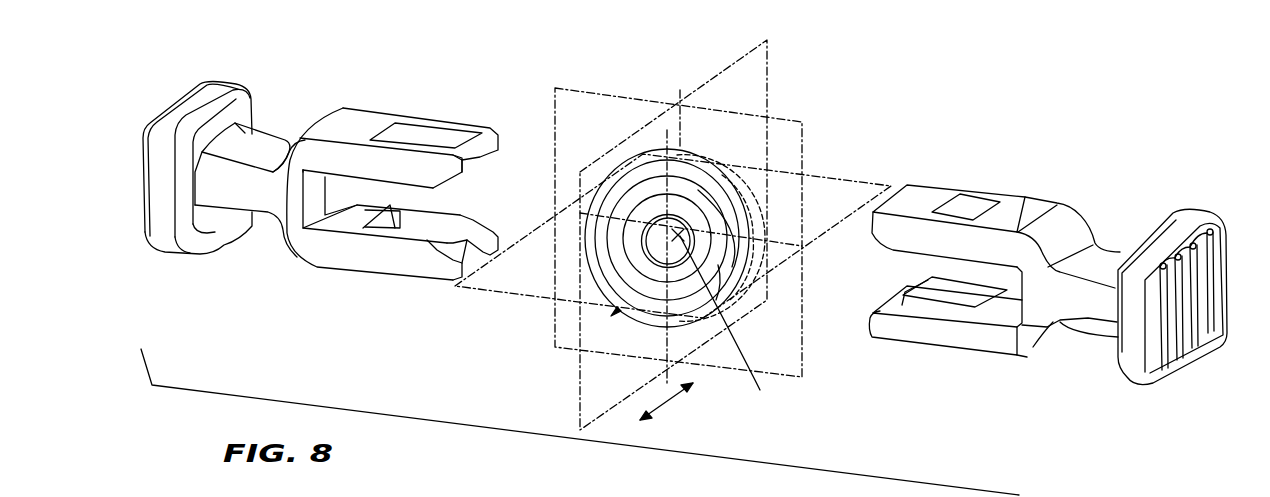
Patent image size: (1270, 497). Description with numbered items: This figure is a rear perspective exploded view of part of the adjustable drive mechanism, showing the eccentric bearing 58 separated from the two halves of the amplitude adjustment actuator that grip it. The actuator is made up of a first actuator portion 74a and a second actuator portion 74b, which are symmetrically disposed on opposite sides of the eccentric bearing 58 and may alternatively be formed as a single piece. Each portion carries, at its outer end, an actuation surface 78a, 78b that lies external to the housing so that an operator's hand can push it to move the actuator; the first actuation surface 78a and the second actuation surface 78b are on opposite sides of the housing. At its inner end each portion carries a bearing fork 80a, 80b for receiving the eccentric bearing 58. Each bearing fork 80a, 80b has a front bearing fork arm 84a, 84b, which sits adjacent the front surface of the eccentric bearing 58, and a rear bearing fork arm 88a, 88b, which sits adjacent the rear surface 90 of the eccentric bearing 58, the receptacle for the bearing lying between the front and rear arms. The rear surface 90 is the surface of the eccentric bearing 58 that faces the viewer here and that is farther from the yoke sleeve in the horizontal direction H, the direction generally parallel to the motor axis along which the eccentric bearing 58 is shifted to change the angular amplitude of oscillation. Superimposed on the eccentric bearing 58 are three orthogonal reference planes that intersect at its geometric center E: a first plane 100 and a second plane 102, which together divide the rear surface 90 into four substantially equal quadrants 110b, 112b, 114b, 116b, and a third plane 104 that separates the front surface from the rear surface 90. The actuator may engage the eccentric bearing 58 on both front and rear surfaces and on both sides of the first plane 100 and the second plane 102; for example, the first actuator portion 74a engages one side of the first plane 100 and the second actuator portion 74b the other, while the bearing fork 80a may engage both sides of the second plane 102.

The eccentric bearing 58 is at (665, 148).
The first actuator portion 74a is at (1020, 208).
The second actuator portion 74b is at (268, 131).
The first actuation surface 78a is at (1203, 217).
The second actuation surface 78b is at (143, 145).
The bearing fork 80a is at (1100, 307).
The bearing fork 80b is at (235, 192).
The front bearing fork arm 84a is at (445, 122).
The front bearing fork arm 84b is at (463, 237).
The rear bearing fork arm 88a is at (412, 166).
The rear bearing fork arm 88b is at (398, 254).
The rear surface 90 is at (617, 307).
The first plane 100 is at (732, 64).
The second plane 102 is at (828, 177).
The third plane 104 is at (588, 90).
The quadrant 110b is at (698, 192).
The quadrant 112b is at (720, 267).
The quadrant 114b is at (617, 248).
The quadrant 116b is at (635, 192).
The geometric center E is at (760, 390).
The horizontal direction H is at (670, 398).